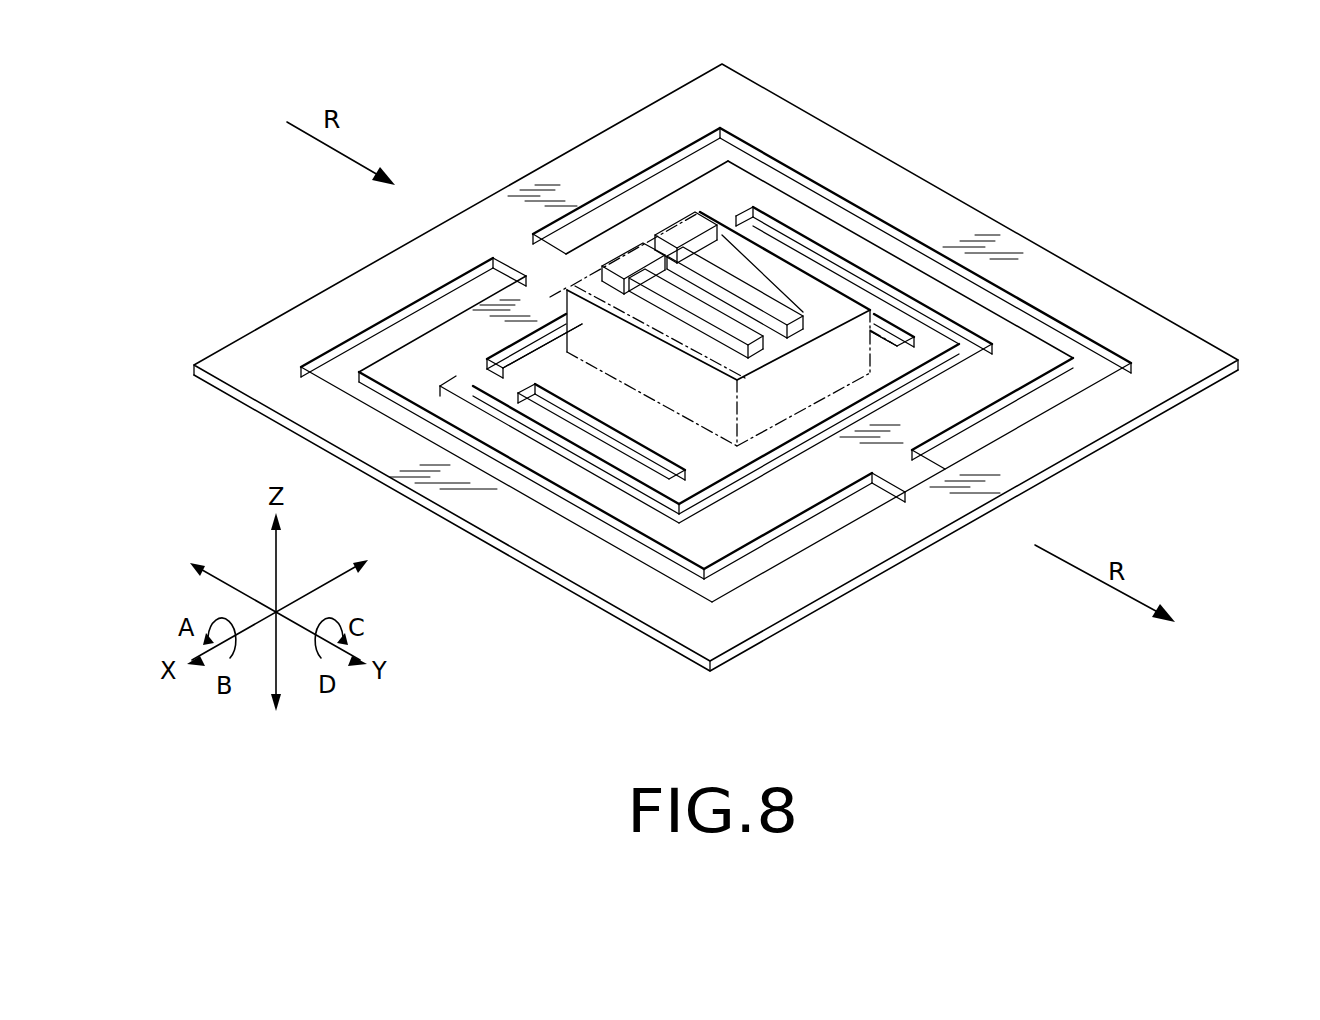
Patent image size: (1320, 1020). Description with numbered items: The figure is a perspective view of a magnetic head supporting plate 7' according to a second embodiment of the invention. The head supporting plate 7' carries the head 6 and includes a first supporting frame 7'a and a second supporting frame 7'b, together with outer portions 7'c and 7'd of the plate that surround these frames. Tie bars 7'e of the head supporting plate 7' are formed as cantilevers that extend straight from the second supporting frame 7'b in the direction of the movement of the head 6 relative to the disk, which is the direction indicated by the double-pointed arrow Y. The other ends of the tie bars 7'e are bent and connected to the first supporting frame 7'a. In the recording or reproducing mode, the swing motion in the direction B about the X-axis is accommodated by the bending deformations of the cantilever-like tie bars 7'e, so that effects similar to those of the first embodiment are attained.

The head supporting plate 7' is at (707, 367).
The first supporting frame 7'a is at (721, 246).
The second supporting frame 7'b is at (724, 341).
The outer frame 7'c is at (716, 365).
The hinge bridges connecting outer and intermediate frames 7'd is at (716, 378).
The tie bars 7'e is at (681, 341).
The head 6 is at (797, 390).